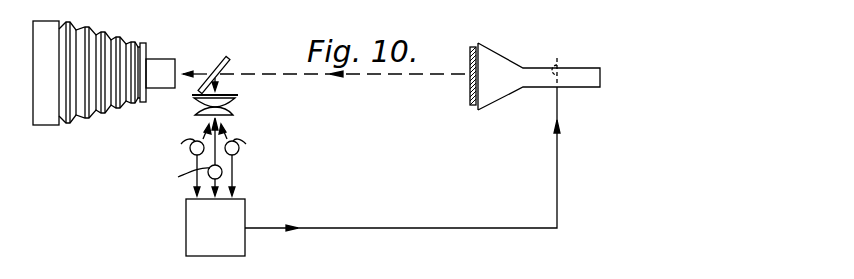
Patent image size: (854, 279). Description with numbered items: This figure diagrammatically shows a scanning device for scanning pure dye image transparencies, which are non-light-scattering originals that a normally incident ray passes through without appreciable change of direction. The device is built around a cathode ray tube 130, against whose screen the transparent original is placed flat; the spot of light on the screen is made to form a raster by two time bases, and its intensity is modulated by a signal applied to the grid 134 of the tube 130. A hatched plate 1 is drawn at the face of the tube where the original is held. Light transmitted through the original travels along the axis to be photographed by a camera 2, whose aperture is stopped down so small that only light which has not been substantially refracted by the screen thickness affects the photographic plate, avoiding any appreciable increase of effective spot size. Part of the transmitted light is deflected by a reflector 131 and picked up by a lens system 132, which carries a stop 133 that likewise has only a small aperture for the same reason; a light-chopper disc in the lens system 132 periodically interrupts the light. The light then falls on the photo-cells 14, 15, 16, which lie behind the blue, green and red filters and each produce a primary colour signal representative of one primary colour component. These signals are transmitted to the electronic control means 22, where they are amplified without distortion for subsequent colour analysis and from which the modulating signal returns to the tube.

The light source plate 1 is at (469, 80).
The camera 2 is at (123, 42).
The photo-cell 14 is at (191, 153).
The photo-cell 15 is at (236, 153).
The photo-cell 16 is at (222, 173).
The electronic control means 22 is at (245, 250).
The cathode ray tube 130 is at (496, 60).
The reflector 131 is at (227, 58).
The lens system 132 is at (196, 104).
The stop 133 is at (238, 95).
The grid 134 is at (570, 64).